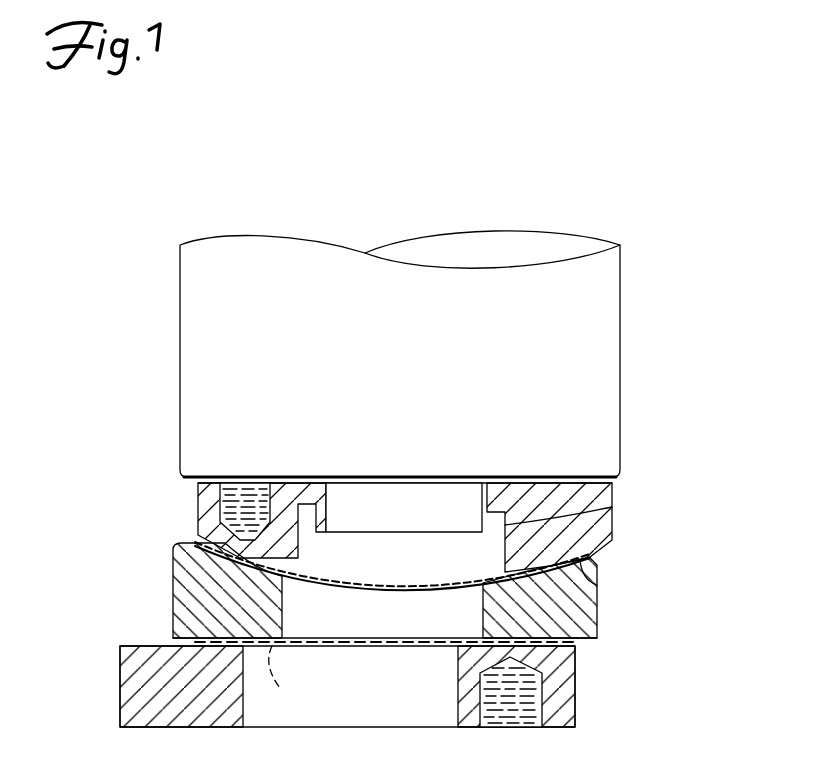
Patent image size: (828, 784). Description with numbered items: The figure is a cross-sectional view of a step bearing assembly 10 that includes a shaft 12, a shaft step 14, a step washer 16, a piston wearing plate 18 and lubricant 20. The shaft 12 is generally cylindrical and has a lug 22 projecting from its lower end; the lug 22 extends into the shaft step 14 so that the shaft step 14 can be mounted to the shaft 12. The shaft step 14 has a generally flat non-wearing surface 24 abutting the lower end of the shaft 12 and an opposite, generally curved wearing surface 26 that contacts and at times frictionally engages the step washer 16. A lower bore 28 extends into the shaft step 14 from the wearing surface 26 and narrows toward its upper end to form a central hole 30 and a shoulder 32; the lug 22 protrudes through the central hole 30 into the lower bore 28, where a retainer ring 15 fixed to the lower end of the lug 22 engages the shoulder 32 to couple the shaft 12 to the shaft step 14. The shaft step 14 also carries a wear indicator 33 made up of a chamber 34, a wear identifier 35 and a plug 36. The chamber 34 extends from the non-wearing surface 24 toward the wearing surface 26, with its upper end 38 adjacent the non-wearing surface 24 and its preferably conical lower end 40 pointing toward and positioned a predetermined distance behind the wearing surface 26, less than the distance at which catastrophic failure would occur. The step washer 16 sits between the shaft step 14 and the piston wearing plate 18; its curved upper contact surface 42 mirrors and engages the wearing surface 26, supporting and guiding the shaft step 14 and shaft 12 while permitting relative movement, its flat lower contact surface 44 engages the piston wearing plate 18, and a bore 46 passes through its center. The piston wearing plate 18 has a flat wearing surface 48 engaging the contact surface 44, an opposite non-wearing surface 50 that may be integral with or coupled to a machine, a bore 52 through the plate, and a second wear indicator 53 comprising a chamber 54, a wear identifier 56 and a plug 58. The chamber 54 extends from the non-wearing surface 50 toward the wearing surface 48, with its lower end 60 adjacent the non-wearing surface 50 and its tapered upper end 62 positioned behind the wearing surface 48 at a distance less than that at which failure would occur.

The step bearing assembly 10 is at (140, 217).
The shaft 12 is at (621, 329).
The shaft step 14 is at (617, 494).
The retainer ring 15 is at (612, 540).
The step washer 16 is at (598, 575).
The piston wearing plate 18 is at (578, 653).
The lubricant 20 is at (362, 590).
The lug 22 is at (388, 530).
The non-wearing surface 24 is at (197, 490).
The wearing surface 26 is at (176, 575).
The lower bore 28 is at (488, 567).
The central hole 30 is at (493, 490).
The shoulder 32 is at (517, 493).
The wear indicator 33 is at (208, 526).
The chamber 34 is at (205, 505).
The wear identifier 35 is at (288, 575).
The plug 36 is at (233, 513).
The upper end 38 is at (296, 495).
The lower end 40 is at (290, 540).
The contact surface 42 is at (595, 598).
The contact surface 44 is at (205, 652).
The bore 46 is at (462, 620).
The wearing surface 48 is at (128, 645).
The non-wearing surface 50 is at (152, 727).
The bore 52 is at (356, 686).
The wear indicator 53 is at (548, 681).
The chamber 54 is at (495, 690).
The wear identifier 56 is at (512, 716).
The plug 58 is at (590, 727).
The lower end 60 is at (467, 727).
The upper end 62 is at (500, 656).